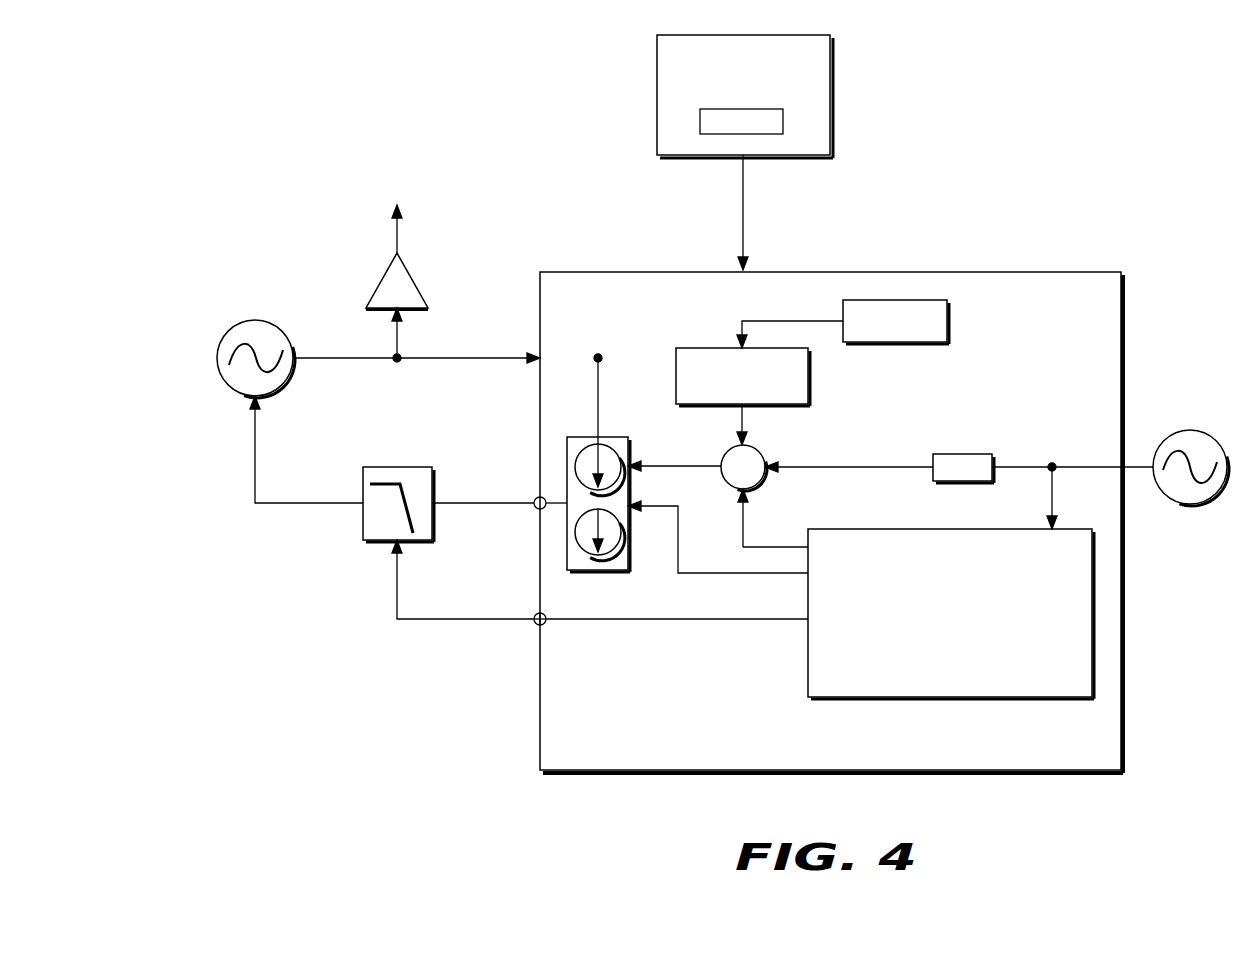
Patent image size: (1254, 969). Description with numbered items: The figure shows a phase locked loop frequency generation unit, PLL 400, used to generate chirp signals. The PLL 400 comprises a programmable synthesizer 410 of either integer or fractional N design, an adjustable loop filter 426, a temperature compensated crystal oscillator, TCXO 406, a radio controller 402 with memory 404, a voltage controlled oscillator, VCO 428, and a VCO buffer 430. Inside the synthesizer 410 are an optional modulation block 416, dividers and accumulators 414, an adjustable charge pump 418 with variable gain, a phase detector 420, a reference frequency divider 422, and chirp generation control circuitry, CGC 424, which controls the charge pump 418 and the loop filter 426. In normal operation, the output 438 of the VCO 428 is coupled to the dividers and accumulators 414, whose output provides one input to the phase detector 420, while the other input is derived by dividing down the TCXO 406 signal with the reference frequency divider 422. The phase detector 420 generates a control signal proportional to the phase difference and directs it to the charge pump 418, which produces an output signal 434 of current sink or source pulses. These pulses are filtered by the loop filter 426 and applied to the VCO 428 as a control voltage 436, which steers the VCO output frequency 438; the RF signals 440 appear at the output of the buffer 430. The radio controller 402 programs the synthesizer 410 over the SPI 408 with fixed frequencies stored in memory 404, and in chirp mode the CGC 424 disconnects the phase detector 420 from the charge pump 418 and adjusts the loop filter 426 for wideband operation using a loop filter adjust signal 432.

The PLL frequency generation unit 400 is at (842, 821).
The radio controller 402 is at (657, 96).
The memory 404 is at (710, 134).
The temperature compensated crystal oscillator 406 is at (1192, 431).
The SPI 408 is at (745, 232).
The programmable synthesizer 410 is at (1125, 302).
The dividers and accumulators 414 is at (811, 377).
The modulation block 416 is at (950, 322).
The charge pump 418 is at (602, 572).
The phase detector 420 is at (760, 450).
The reference frequency divider 422 is at (966, 455).
The chirp generation control circuitry 424 is at (950, 529).
The adjustable loop filter 426 is at (397, 466).
The voltage controlled oscillator 428 is at (257, 319).
The VCO buffer 430 is at (383, 279).
The loop filter adjust signal 432 is at (484, 617).
The charge pump output signal 434 is at (482, 504).
The control voltage 436 is at (308, 501).
The VCO output 438 is at (339, 356).
The RF signals 440 is at (398, 233).